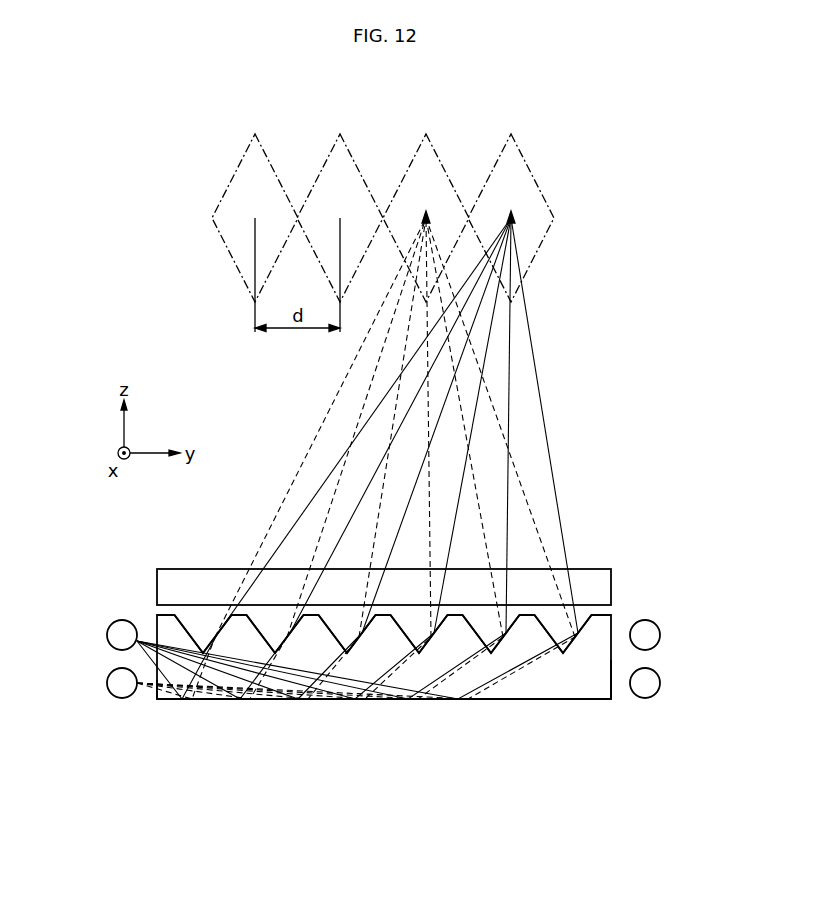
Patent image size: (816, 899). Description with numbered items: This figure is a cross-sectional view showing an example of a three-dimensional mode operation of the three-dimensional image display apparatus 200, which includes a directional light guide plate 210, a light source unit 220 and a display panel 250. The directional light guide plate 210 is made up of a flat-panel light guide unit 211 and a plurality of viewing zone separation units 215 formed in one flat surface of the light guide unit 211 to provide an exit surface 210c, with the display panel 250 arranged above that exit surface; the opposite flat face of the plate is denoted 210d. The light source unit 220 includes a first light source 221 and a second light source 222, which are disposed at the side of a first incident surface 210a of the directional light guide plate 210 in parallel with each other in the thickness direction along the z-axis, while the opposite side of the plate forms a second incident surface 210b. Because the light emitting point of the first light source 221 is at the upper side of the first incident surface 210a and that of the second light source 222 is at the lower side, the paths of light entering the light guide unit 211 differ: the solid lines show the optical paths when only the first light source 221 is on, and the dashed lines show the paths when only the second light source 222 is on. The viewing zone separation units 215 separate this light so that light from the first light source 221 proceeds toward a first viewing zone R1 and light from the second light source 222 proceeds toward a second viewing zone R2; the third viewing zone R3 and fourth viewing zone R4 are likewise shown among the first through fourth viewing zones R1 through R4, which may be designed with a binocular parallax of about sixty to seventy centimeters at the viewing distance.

The 3D image display apparatus 200 is at (99, 303).
The directional light guide plate 210 is at (397, 659).
The first incident surface 210a is at (153, 699).
The second incident surface 210b is at (612, 680).
The exit surface 210c is at (602, 613).
The lower surface of light guide plate 210d is at (485, 700).
The light guide unit 211 is at (553, 692).
The viewing zone separation units 215 is at (205, 623).
The light source unit 220 is at (357, 707).
The first light source 221 is at (115, 622).
The second light source 222 is at (118, 697).
The display panel 250 is at (590, 572).
The first viewing zone R1 is at (521, 152).
The second viewing zone R2 is at (436, 152).
The third viewing zone R3 is at (350, 152).
The fourth viewing zone R4 is at (265, 152).